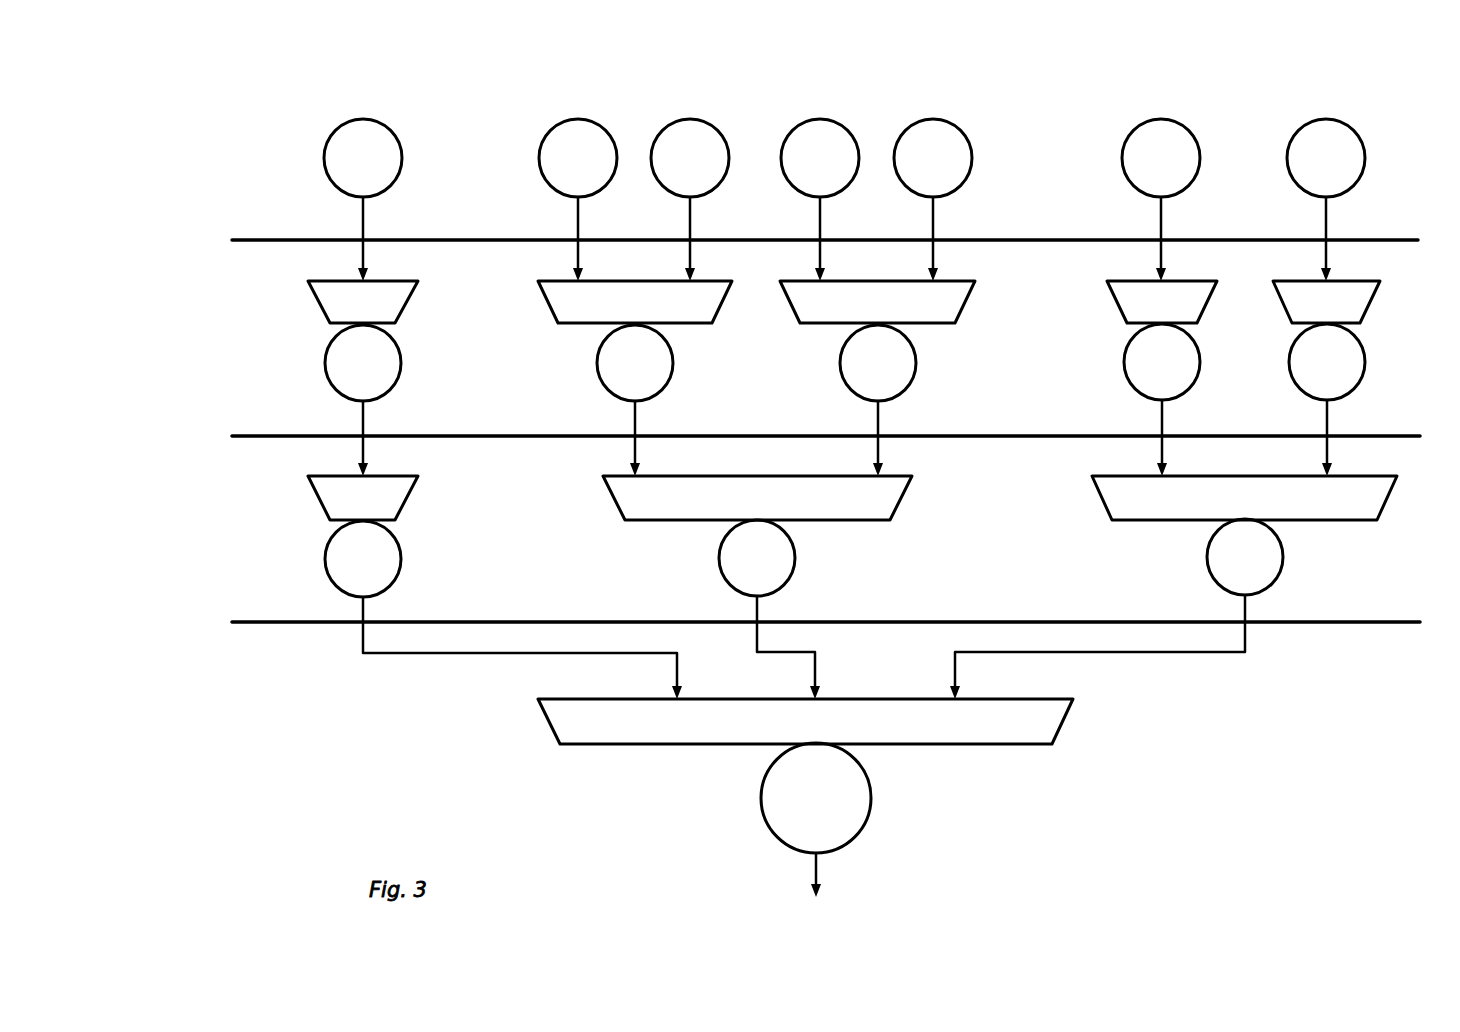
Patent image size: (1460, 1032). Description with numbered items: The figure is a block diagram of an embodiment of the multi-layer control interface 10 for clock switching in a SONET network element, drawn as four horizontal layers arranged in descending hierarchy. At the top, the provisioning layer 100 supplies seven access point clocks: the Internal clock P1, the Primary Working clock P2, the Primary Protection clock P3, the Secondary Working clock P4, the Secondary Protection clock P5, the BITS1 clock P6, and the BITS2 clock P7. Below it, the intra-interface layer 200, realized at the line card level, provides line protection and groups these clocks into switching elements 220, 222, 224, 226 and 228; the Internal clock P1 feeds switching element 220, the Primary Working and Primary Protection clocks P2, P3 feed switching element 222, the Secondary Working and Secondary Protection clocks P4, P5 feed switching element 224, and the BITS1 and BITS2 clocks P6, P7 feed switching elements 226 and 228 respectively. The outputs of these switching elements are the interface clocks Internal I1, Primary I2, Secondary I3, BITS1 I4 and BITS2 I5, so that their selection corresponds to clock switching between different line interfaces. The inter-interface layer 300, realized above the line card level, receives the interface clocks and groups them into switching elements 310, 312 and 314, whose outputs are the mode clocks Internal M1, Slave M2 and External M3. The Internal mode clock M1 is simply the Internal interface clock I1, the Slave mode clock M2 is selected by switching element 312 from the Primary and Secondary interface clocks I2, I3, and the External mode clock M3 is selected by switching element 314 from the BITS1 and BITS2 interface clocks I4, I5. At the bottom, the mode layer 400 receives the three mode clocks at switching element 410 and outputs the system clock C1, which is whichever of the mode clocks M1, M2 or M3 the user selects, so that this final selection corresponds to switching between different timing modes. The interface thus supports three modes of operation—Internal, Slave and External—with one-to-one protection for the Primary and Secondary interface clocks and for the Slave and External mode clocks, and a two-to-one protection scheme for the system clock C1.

The multi-layer control interface 10 is at (1244, 96).
The provisioning layer 100 is at (184, 130).
The intra-interface layer 200 is at (178, 322).
The inter-interface layer 300 is at (176, 490).
The mode layer 400 is at (186, 672).
The Internal clock P1 is at (402, 155).
The Primary Working clock P2 is at (539, 158).
The Primary Protection clock P3 is at (662, 128).
The Secondary Working clock P4 is at (791, 128).
The Secondary Protection clock P5 is at (905, 128).
The BITS1 clock P6 is at (1123, 157).
The BITS2 clock P7 is at (1364, 157).
The switching element 220 is at (409, 303).
The switching element 222 is at (722, 303).
The switching element 224 is at (965, 303).
The switching element 226 is at (1207, 303).
The switching element 228 is at (1370, 303).
The Internal interface clock I1 is at (401, 363).
The Primary interface clock I2 is at (597, 363).
The Secondary interface clock I3 is at (840, 363).
The BITS1 interface clock I4 is at (1124, 362).
The BITS2 interface clock I5 is at (1365, 362).
The switching element 310 is at (409, 498).
The switching element 312 is at (612, 498).
The switching element 314 is at (1100, 497).
The Internal mode clock M1 is at (401, 559).
The Slave mode clock M2 is at (795, 556).
The External mode clock M3 is at (1283, 555).
The switching element 410 is at (548, 722).
The system clock C1 is at (762, 798).